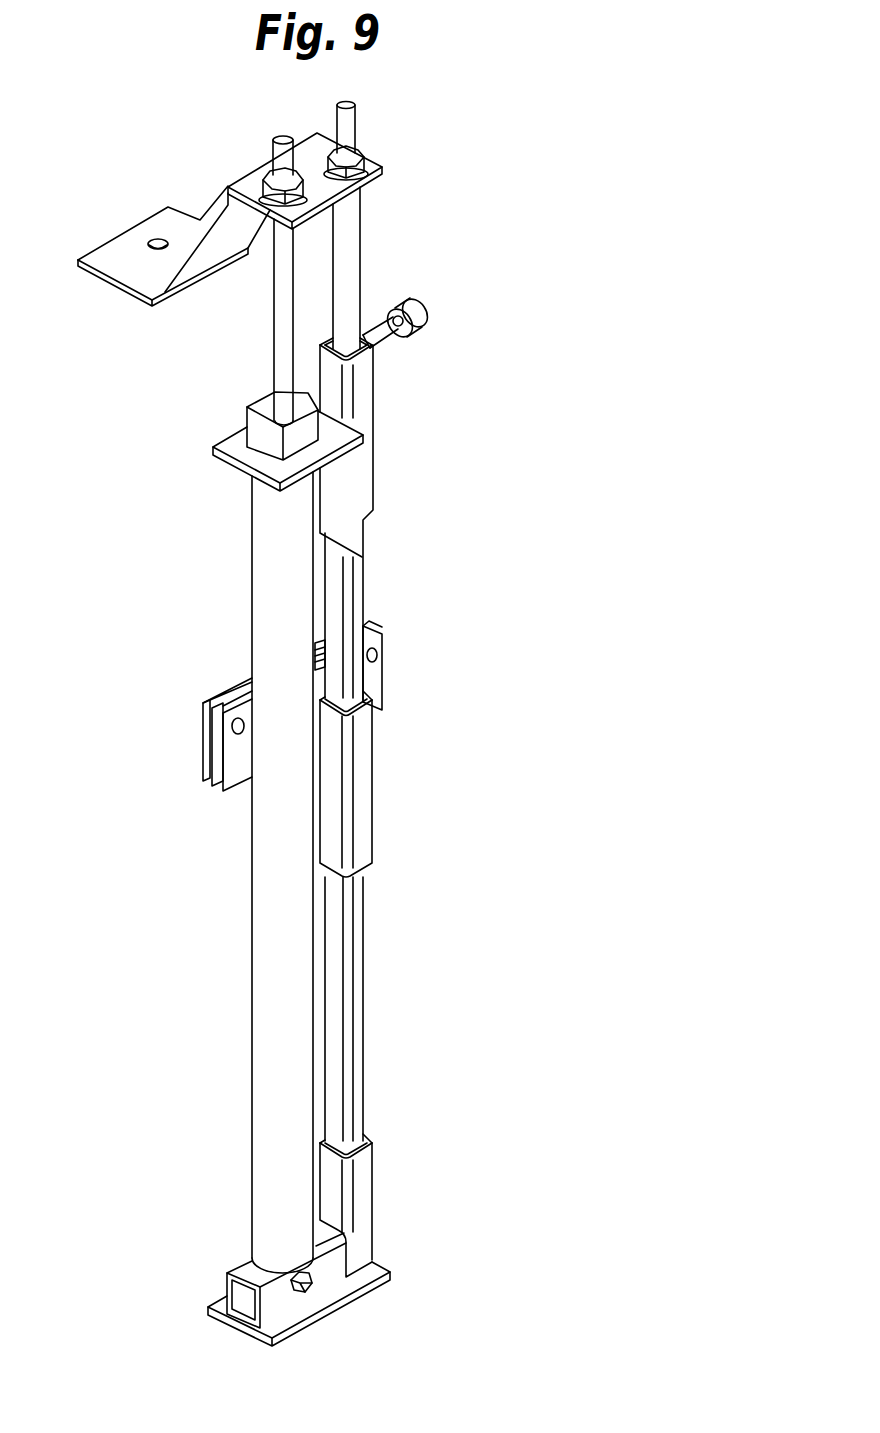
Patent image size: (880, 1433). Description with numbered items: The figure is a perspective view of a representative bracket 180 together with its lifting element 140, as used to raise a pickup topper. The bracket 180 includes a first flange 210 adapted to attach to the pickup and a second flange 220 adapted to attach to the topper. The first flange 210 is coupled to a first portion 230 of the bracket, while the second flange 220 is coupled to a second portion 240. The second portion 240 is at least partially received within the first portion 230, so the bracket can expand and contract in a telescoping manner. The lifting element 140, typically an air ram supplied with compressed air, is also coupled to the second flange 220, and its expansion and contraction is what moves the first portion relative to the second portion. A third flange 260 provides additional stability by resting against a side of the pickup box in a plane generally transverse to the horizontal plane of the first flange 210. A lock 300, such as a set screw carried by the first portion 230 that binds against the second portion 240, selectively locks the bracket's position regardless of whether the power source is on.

The lifting element 140 is at (258, 552).
The bracket 180 is at (392, 780).
The first flange 210 is at (376, 1268).
The second flange 220 is at (112, 252).
The first portion 230 is at (362, 1003).
The second portion 240 is at (346, 242).
The third flange 260 is at (383, 656).
The lock 300 is at (384, 339).